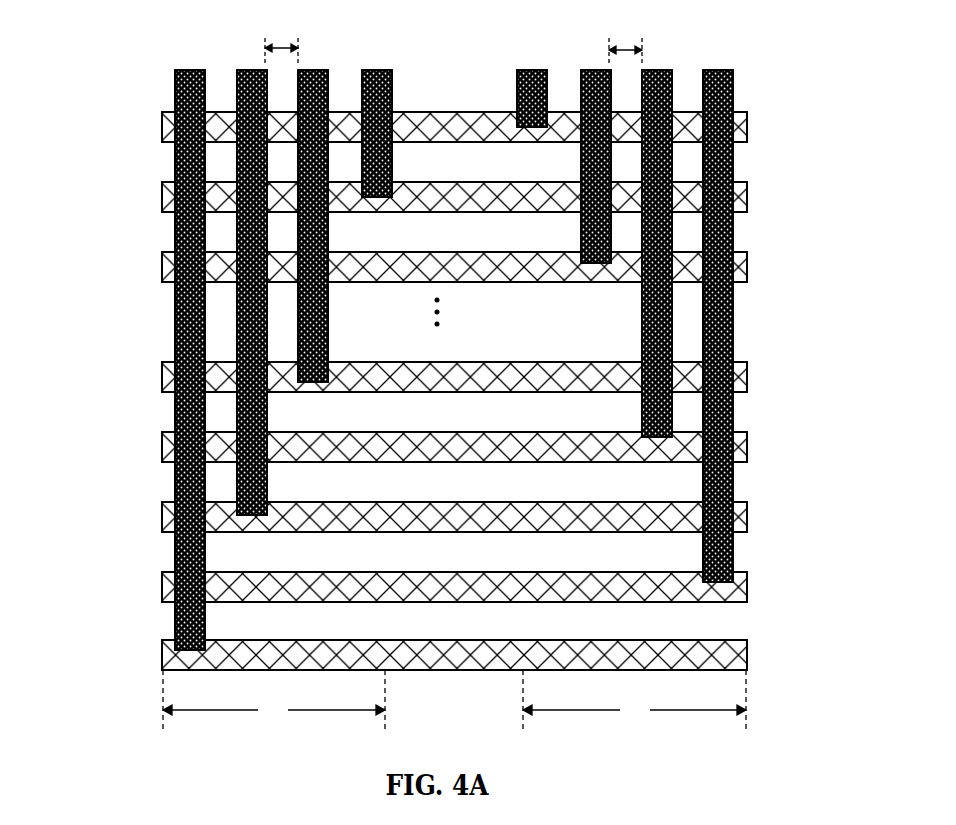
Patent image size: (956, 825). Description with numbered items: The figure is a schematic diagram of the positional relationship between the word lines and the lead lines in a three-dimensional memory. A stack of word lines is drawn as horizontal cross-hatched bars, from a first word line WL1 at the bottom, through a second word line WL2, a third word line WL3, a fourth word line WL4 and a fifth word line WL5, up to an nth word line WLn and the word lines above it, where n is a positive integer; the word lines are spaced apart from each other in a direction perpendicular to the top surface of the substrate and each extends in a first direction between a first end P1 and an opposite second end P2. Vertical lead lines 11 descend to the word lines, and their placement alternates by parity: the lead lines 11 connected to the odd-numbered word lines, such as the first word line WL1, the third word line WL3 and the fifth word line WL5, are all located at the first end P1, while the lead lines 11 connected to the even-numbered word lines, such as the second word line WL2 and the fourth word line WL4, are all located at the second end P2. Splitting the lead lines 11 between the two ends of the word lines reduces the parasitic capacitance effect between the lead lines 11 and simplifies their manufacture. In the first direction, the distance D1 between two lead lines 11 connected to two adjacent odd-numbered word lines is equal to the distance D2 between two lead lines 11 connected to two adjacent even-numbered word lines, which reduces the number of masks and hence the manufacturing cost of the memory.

The lead line 11 is at (733, 548).
The first word line WL1 is at (422, 654).
The second word line WL2 is at (422, 586).
The third word line WL3 is at (422, 516).
The fourth word line WL4 is at (422, 446).
The fifth word line WL5 is at (422, 376).
The nth word line WLn is at (421, 266).
The distance between lead lines of adjacent odd-numbered word lines D1 is at (281, 38).
The distance between lead lines of adjacent even-numbered word lines D2 is at (625, 38).
The first end P1 is at (274, 701).
The second end P2 is at (634, 701).